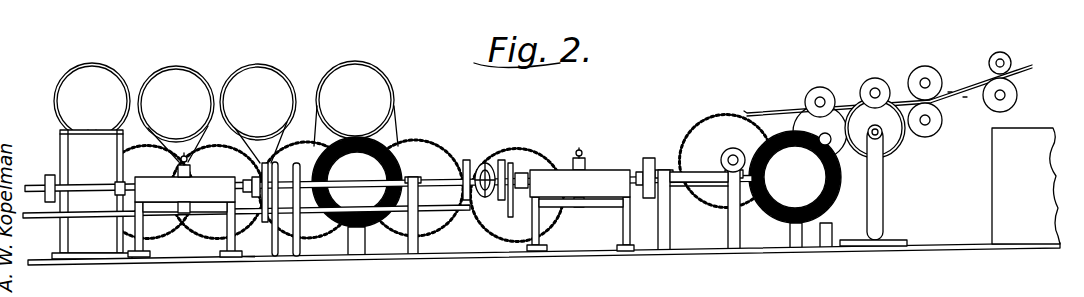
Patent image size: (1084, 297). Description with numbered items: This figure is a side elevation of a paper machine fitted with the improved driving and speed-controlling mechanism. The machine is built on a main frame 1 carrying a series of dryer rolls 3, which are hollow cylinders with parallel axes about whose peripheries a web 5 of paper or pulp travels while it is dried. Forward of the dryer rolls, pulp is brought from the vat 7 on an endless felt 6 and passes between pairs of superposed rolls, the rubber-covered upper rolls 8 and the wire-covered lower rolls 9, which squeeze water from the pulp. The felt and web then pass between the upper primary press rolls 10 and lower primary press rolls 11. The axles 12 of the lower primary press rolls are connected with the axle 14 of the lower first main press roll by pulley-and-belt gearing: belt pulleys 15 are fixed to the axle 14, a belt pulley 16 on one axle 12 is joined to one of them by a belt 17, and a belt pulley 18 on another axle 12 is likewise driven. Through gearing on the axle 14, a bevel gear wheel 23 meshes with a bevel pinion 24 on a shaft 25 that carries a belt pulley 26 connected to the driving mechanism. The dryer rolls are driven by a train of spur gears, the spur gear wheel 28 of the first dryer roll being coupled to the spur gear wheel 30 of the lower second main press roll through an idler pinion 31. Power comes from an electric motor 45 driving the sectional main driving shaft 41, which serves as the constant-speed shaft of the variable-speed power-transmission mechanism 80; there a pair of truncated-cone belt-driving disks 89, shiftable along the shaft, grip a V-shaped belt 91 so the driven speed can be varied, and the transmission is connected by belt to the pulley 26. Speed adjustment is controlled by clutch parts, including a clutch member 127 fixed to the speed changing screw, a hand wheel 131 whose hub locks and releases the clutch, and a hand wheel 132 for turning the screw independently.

The main frame 1 is at (475, 252).
The dryer rolls 3 is at (108, 84).
The web 5 is at (950, 92).
The felt 6 is at (965, 97).
The vat 7 is at (1000, 177).
The upper rolls 8 is at (1003, 54).
The lower rolls 9 is at (1013, 97).
The upper primary press rolls 10 is at (820, 93).
The lower primary press rolls 11 is at (938, 128).
The axles 12 is at (822, 136).
The axle 14 is at (727, 158).
The belt pulleys 15 is at (722, 111).
The belt pulley 16 is at (810, 122).
The belt 17 is at (763, 122).
The belt pulley 18 is at (873, 112).
The bevel gear wheel 23 is at (810, 218).
The bevel pinion 24 is at (757, 188).
The shaft 25 is at (683, 186).
The belt pulley 26 is at (645, 159).
The spur gear wheel 28 is at (290, 165).
The spur gear wheel 30 is at (518, 148).
The idler pinion 31 is at (476, 158).
The main driving shaft 41 is at (405, 170).
The electric motor 45 is at (78, 150).
The variable-speed power-transmission mechanism 80 is at (605, 175).
The belt-driving disks 89 is at (192, 171).
The belt 91 is at (185, 152).
The clutch member 127 is at (235, 186).
The hand wheel 131 is at (277, 214).
The hand wheel 132 is at (305, 210).